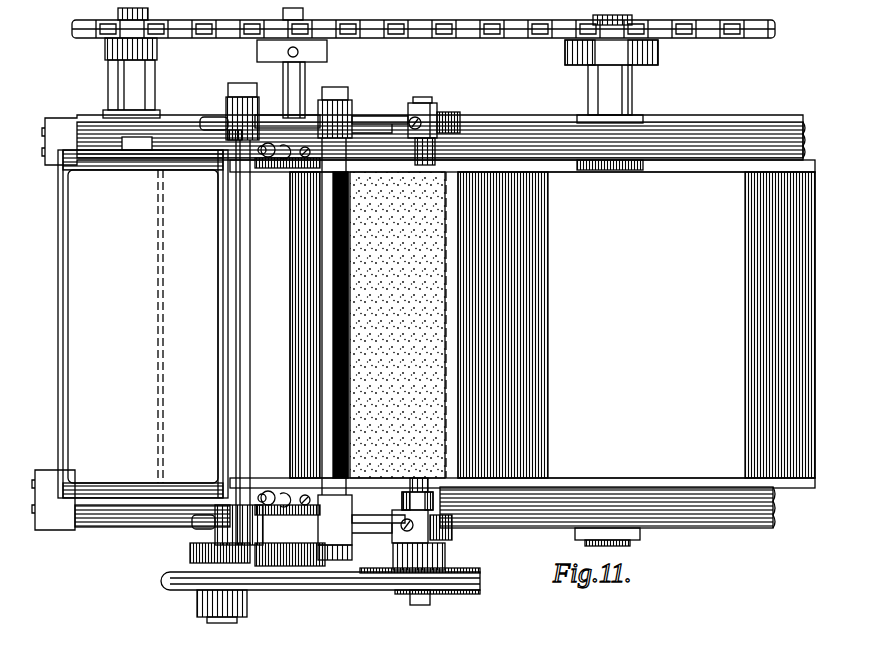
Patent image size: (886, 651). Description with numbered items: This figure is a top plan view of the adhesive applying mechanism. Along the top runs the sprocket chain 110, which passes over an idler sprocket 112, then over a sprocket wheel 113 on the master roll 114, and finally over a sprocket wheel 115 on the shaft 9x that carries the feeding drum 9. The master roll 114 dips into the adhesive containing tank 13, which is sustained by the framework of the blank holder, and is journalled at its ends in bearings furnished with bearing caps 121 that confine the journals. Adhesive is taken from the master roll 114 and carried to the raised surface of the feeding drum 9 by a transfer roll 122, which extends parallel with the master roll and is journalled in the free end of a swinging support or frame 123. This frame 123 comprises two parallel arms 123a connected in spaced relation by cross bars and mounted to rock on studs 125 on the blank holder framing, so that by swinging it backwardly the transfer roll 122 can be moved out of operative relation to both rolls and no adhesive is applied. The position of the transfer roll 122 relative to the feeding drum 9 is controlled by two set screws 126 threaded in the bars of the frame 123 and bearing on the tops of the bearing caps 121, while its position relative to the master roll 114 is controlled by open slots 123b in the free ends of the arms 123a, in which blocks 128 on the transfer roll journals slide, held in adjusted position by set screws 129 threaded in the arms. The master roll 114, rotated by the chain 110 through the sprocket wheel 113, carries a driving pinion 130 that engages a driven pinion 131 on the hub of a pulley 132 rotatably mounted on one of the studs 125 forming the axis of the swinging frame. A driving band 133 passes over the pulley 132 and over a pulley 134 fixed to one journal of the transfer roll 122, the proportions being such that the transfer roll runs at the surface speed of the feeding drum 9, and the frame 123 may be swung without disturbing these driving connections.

The feeding drum 9 is at (636, 325).
The shaft 9x is at (632, 105).
The adhesive containing tank 13 is at (64, 348).
The sprocket chain 110 is at (441, 34).
The idler sprocket 112 is at (100, 37).
The sprocket wheel 113 is at (336, 40).
The master roll 114 is at (304, 325).
The sprocket wheel 115 is at (556, 42).
The bearing caps 121 is at (292, 162).
The transfer roll 122 is at (398, 325).
The swinging support or frame 123 is at (300, 116).
The parallel arms 123a is at (372, 113).
The open slots 123b is at (461, 118).
The studs 125 is at (228, 95).
The set screws 126 is at (266, 158).
The blocks 128 is at (412, 102).
The set screws 129 is at (424, 118).
The driving pinion 130 is at (312, 568).
The driven pinion 131 is at (188, 553).
The pulley 132 is at (180, 591).
The driving band 133 is at (350, 590).
The pulley 134 is at (404, 597).